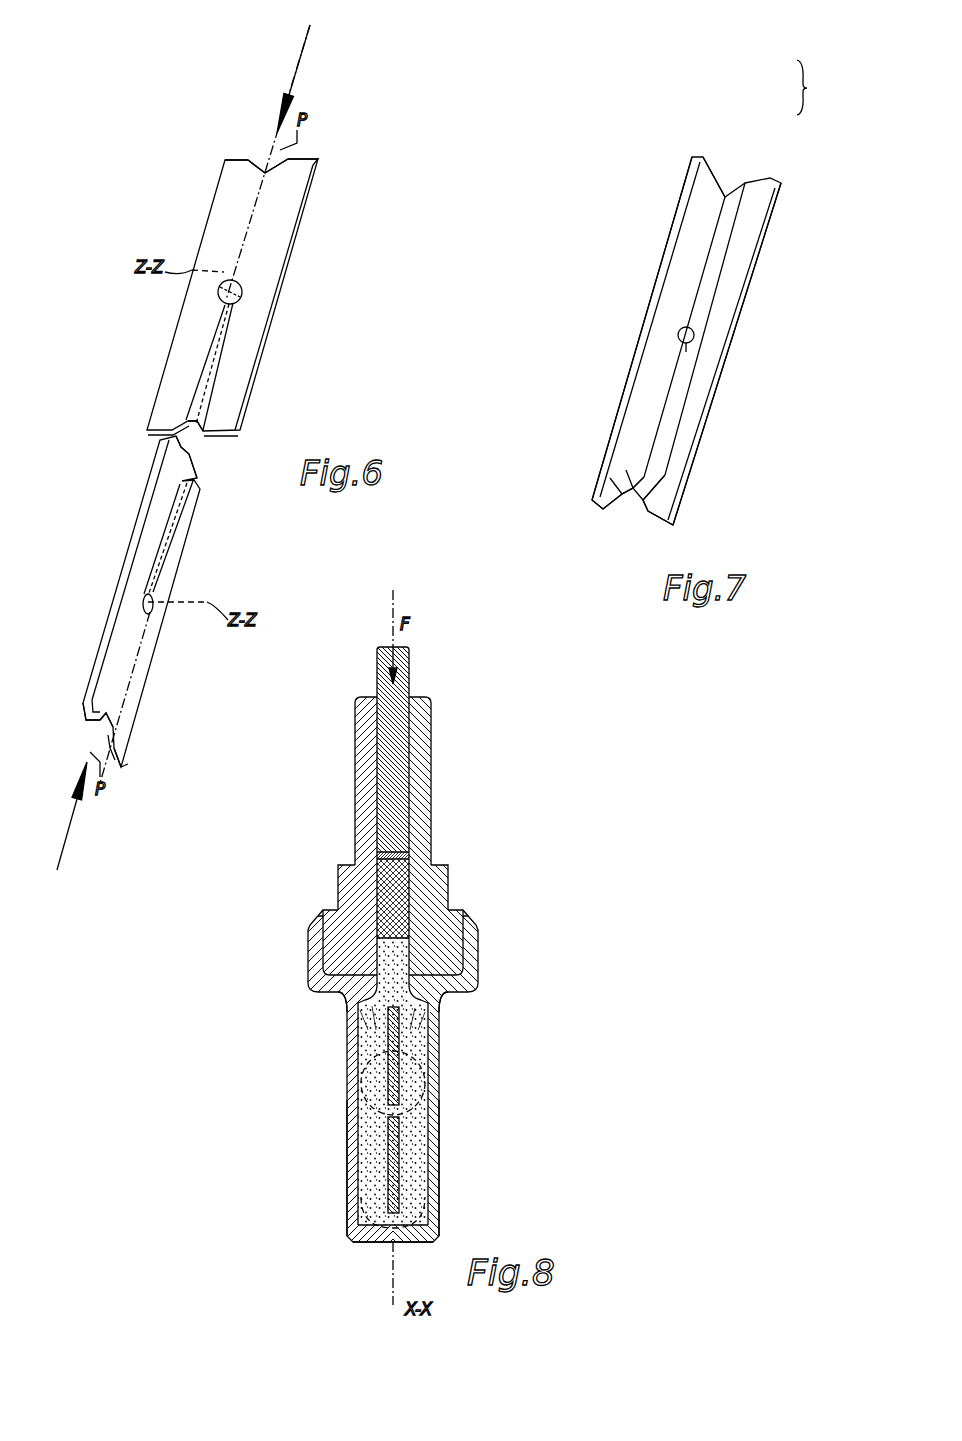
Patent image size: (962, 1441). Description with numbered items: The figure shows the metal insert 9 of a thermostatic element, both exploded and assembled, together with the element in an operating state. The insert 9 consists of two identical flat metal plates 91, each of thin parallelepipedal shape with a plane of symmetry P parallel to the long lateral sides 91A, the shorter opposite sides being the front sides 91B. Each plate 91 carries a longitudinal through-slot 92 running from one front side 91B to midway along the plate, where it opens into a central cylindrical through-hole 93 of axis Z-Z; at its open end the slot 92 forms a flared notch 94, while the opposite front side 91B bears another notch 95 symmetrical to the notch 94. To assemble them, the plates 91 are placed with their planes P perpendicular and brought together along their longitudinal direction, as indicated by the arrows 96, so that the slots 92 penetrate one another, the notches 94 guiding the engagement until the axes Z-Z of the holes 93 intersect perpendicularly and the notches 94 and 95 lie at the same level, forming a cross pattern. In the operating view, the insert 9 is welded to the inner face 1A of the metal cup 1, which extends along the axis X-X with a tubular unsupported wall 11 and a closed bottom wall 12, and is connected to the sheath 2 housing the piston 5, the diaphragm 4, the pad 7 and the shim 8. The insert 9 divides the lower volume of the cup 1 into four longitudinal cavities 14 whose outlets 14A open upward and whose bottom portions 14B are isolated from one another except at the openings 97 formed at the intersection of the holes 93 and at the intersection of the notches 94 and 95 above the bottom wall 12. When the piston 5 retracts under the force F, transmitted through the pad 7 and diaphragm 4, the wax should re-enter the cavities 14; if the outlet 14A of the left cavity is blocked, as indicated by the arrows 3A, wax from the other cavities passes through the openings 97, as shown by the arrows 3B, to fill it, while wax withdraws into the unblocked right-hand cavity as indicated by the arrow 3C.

In FIG. 8, the metal cup 1 is at (340, 1177).
In FIG. 8, the inner face of the cup 1A is at (354, 1126).
In FIG. 8, the sheath 2 is at (438, 760).
In FIG. 8, the arrows indicating blocked outlet 3A is at (347, 1002).
In FIG. 8, the arrows indicating wax flow through openings 3B is at (412, 1103).
In FIG. 8, the arrow indicating wax withdrawal 3C is at (440, 1006).
In FIG. 8, the elastically deformable diaphragm 4 is at (418, 898).
In FIG. 8, the piston 5 is at (400, 680).
In FIG. 8, the pad 7 is at (410, 856).
In FIG. 8, the shim 8 is at (437, 812).
In FIG. 7, the metal insert 9 is at (705, 292).
In FIG. 8, the metal insert 9 is at (380, 1058).
In FIG. 8, the tubular unsupported wall 11 is at (352, 1192).
In FIG. 8, the closed transverse bottom wall 12 is at (358, 1243).
In FIG. 8, the longitudinal cavities 14 is at (176, 1032).
In FIG. 8, the outlets of the cavities 14A is at (355, 1013).
In FIG. 8, the bottom portions of the cavities 14B is at (368, 1075).
In FIG. 6, the flat metal plate 91 is at (228, 206).
In FIG. 7, the flat metal plate 91 is at (710, 180).
In FIG. 6, the lateral sides of the plate 91A is at (291, 276).
In FIG. 7, the lateral sides of the plate 91A is at (655, 252).
In FIG. 6, the front sides of the plate 91B is at (308, 150).
In FIG. 7, the front sides of the plate 91B is at (604, 474).
In FIG. 6, the longitudinal through-slot 92 is at (236, 340).
In FIG. 6, the through-hole 93 is at (240, 288).
In FIG. 7, the through-hole 93 is at (678, 338).
In FIG. 6, the flared notch 94 is at (200, 421).
In FIG. 7, the flared notch 94 is at (630, 500).
In FIG. 6, the front notch 95 is at (263, 158).
In FIG. 7, the front notch 95 is at (645, 522).
In FIG. 6, the arrows indicating assembly direction 96 is at (298, 55).
In FIG. 8, the openings 97 is at (362, 1278).